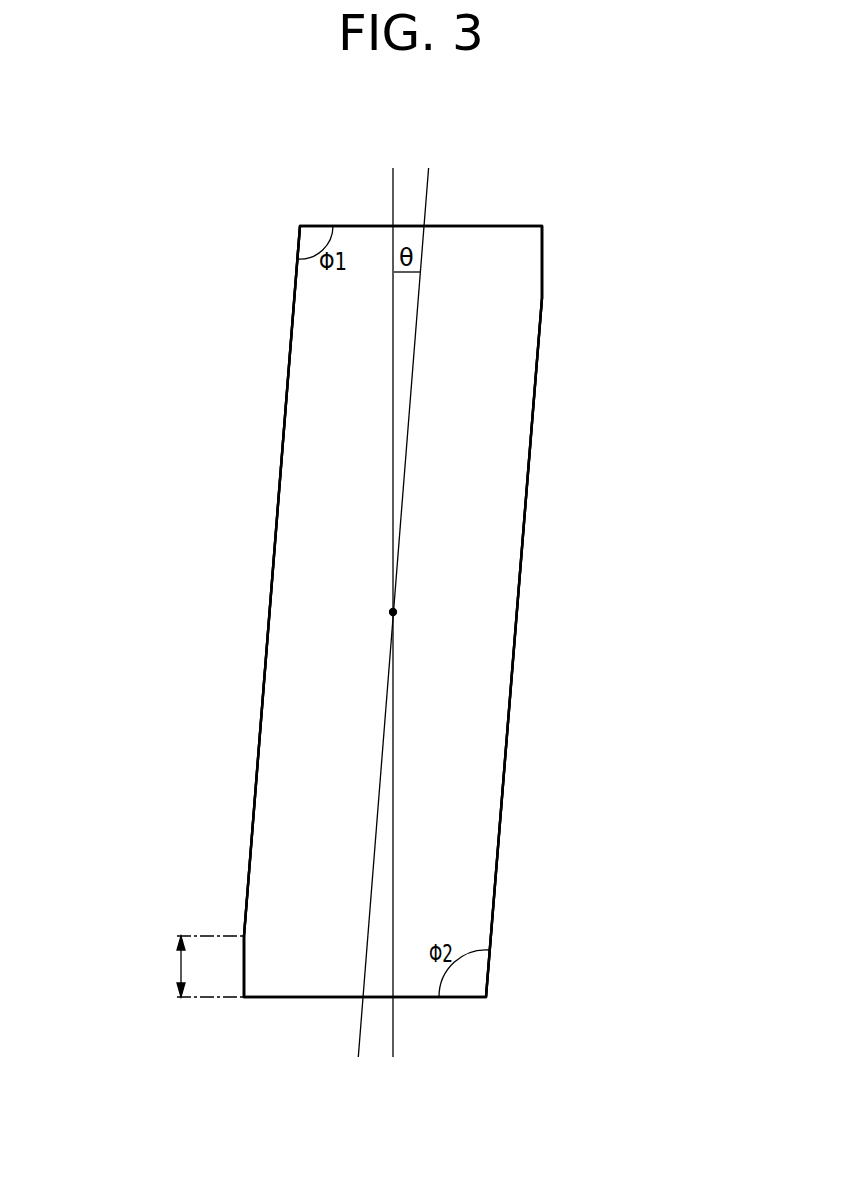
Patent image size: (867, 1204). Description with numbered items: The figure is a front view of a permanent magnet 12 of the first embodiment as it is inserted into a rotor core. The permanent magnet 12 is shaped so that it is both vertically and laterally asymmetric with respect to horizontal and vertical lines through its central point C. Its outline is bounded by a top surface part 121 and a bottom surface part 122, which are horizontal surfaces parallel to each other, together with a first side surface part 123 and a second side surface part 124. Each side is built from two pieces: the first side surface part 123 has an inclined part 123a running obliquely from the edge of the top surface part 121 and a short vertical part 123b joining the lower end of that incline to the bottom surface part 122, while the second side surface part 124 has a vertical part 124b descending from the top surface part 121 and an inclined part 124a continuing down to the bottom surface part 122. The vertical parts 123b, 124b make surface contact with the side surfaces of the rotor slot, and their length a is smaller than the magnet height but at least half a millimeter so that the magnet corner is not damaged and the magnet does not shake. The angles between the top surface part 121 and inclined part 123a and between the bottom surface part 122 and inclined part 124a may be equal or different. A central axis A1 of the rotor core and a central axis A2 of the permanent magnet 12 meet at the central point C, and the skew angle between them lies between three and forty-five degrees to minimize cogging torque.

The permanent magnet 12 is at (523, 188).
The top surface part 121 is at (488, 226).
The bottom surface part 122 is at (310, 999).
The first side surface part 123 is at (113, 853).
The inclined part 123a is at (250, 872).
The vertical part 123b is at (244, 966).
The second side surface part 124 is at (626, 245).
The inclined part 124a is at (541, 312).
The vertical part 124b is at (542, 258).
The central axis of the rotor core A1 is at (392, 597).
The central axis of the permanent magnet A2 is at (399, 597).
The central point C is at (396, 612).
The length of the vertical part a is at (205, 966).